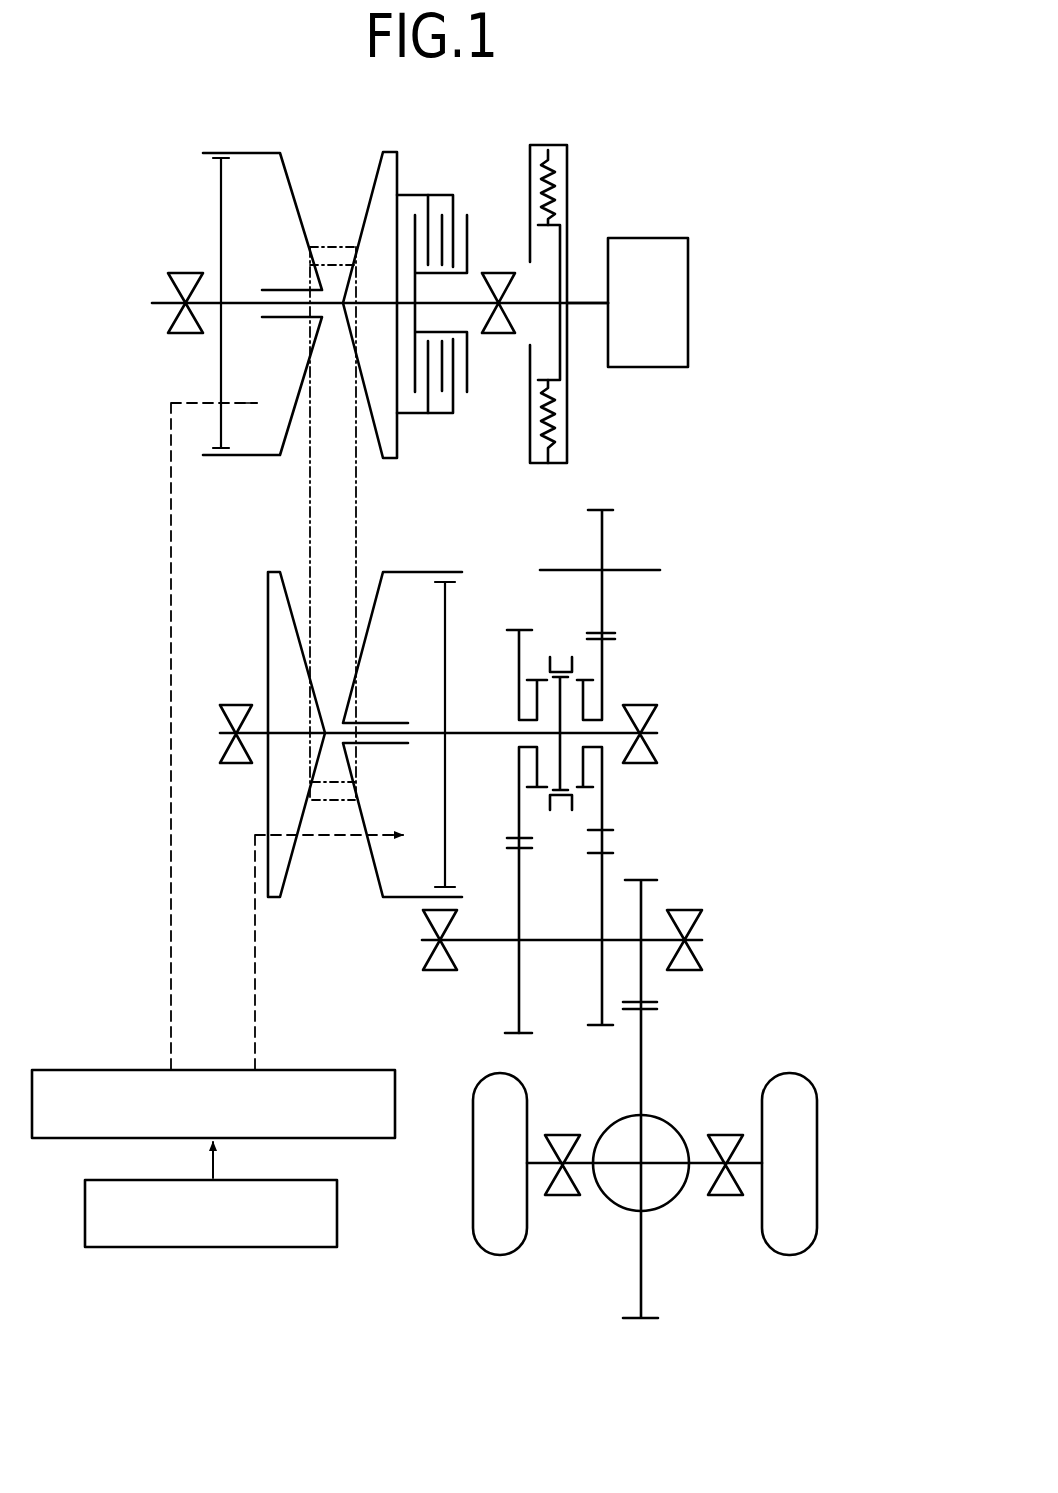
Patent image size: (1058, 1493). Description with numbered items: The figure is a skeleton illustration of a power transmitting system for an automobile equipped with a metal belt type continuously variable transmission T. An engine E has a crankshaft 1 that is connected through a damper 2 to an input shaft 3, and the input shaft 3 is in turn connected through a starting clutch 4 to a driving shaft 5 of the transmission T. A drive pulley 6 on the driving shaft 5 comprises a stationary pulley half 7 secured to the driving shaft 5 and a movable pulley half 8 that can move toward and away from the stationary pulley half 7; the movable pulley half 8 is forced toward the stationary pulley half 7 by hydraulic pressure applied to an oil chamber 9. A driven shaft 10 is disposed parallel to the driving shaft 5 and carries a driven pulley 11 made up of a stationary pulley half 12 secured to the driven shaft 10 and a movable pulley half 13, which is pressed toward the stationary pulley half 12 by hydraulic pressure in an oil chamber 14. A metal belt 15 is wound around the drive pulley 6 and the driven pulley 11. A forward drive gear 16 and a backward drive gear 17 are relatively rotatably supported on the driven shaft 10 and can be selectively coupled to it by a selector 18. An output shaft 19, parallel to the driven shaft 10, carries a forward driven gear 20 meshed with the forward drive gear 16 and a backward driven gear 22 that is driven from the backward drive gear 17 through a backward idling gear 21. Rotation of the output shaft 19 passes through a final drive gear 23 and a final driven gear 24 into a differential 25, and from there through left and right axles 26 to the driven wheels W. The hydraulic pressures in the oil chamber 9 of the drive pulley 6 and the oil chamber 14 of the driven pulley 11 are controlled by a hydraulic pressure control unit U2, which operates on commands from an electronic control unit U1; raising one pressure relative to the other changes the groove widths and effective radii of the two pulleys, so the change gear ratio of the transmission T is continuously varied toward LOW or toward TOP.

The crankshaft 1 is at (584, 310).
The damper 2 is at (580, 192).
The input shaft 3 is at (522, 300).
The starting clutch 4 is at (440, 192).
The driving shaft 5 is at (238, 300).
The drive pulley 6 is at (323, 200).
The stationary pulley half 7 is at (381, 196).
The movable pulley half 8 is at (288, 188).
The oil chamber 9 is at (277, 378).
The driven shaft 10 is at (500, 733).
The driven pulley 11 is at (345, 887).
The stationary pulley half 12 is at (268, 608).
The movable pulley half 13 is at (378, 604).
The oil chamber 14 is at (437, 820).
The metal belt 15 is at (357, 524).
The forward drive gear 16 is at (520, 630).
The backward drive gear 17 is at (612, 641).
The selector 18 is at (560, 810).
The output shaft 19 is at (543, 938).
The forward driven gear 20 is at (525, 1033).
The backward idling gear 21 is at (612, 507).
The backward driven gear 22 is at (590, 1028).
The final drive gear 23 is at (650, 868).
The final driven gear 24 is at (650, 1010).
The differential 25 is at (668, 1117).
The axles 26 is at (578, 1165).
The engine E is at (664, 315).
The metal belt type continuously variable transmission T is at (257, 509).
The driven wheels W is at (473, 1215).
The electronic control unit U1 is at (340, 1196).
The hydraulic pressure control unit U2 is at (396, 1090).